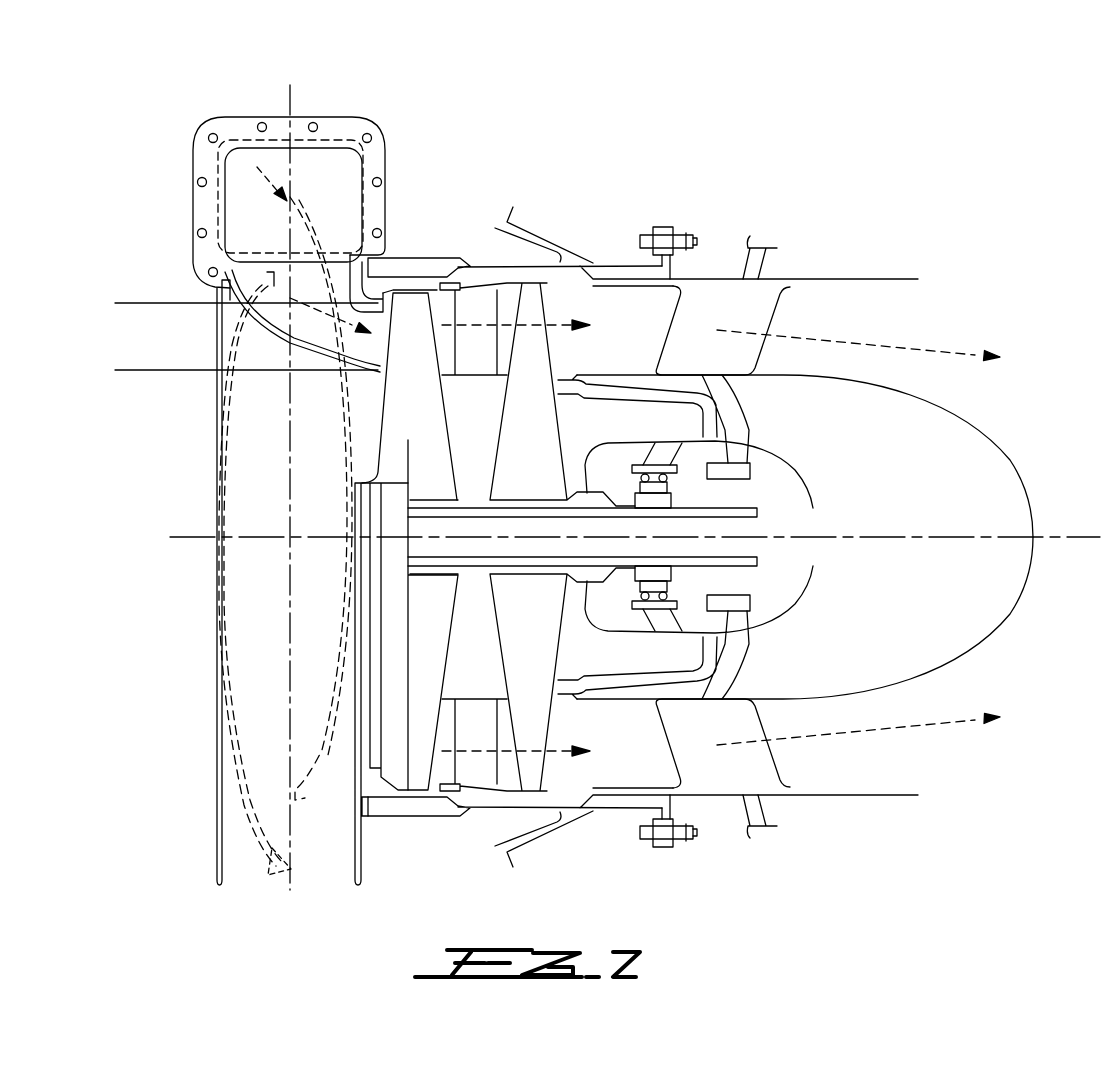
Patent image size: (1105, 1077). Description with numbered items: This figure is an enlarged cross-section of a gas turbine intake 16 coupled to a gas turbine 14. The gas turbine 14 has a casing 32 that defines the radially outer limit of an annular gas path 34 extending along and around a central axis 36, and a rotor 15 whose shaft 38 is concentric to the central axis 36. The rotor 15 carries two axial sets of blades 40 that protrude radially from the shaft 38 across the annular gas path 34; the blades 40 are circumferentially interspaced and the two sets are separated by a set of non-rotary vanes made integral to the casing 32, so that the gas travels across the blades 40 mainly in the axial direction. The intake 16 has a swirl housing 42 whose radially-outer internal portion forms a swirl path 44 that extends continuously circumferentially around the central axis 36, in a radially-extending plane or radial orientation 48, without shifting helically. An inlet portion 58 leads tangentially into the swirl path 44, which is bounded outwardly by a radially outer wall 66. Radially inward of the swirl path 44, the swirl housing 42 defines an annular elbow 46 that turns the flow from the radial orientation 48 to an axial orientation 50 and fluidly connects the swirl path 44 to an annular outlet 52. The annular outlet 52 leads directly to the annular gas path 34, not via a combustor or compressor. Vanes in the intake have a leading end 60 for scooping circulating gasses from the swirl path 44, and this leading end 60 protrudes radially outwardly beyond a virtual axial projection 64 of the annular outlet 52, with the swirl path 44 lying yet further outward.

The gas turbine 14 is at (680, 287).
The rotor 15 is at (720, 507).
The gas turbine intake 16 is at (380, 223).
The casing 32 is at (495, 273).
The annular gas path 34 is at (587, 305).
The central axis 36 is at (963, 537).
The shaft 38 is at (757, 512).
The blades 40 is at (537, 680).
The swirl housing 42 is at (213, 537).
The swirl path 44 is at (243, 174).
The annular elbow 46 is at (303, 246).
The radial orientation 48 is at (288, 103).
The axial orientation 50 is at (270, 274).
The annular outlet 52 is at (363, 350).
The inlet portion 58 is at (327, 165).
The leading end 60 is at (302, 248).
The virtual axial projection 64 is at (110, 305).
The radially outer wall 66 is at (330, 130).